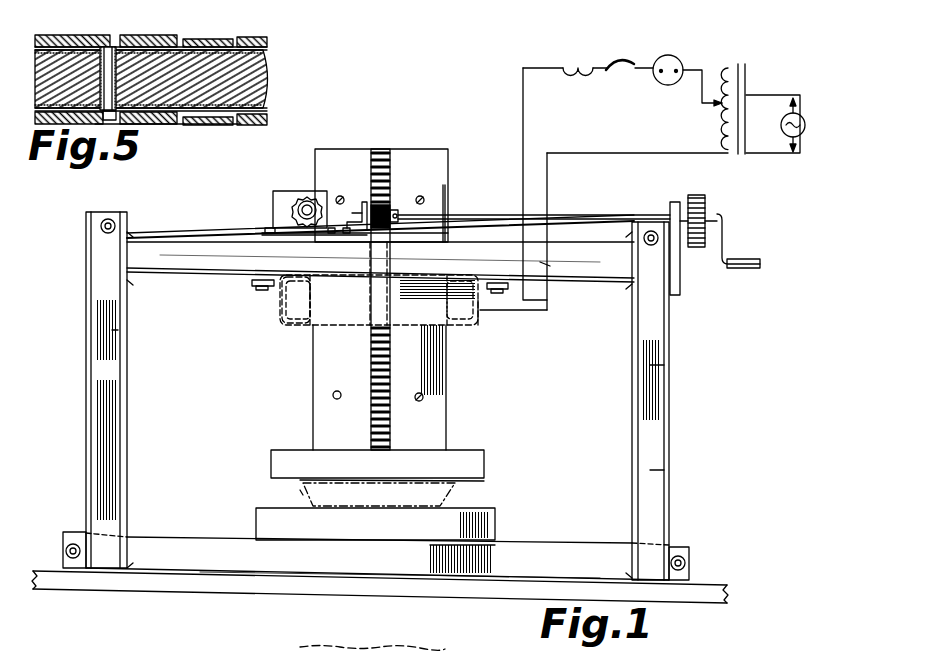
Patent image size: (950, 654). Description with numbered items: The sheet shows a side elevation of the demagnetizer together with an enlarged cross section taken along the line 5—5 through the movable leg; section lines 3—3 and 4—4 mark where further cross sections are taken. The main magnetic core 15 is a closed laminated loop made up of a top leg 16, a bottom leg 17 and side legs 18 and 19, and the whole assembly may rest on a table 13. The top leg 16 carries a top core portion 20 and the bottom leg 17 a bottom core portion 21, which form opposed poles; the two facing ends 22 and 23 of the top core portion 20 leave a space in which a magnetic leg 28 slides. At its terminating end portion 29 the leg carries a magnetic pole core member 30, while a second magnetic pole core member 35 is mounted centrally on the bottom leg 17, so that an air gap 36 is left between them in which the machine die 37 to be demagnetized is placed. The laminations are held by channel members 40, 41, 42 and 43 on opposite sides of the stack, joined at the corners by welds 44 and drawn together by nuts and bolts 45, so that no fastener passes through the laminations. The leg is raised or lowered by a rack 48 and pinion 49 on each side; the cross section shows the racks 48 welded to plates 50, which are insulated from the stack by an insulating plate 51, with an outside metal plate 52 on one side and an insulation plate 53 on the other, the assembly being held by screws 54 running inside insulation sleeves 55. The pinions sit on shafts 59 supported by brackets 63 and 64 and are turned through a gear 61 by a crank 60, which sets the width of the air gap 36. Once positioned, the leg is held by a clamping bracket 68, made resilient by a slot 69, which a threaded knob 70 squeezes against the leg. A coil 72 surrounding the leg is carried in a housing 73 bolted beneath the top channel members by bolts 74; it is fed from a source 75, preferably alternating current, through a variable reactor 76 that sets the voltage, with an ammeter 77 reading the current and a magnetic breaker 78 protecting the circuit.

In FIG. 1, the section line 3— 3 is at (380, 149).
In FIG. 1, the section line 4— 4 is at (50, 390).
In FIG. 1, the section line 5— 5 is at (334, 395).
In FIG. 1, the table 13 is at (706, 600).
In FIG. 1, the main magnetic core 15 is at (712, 361).
In FIG. 1, the top leg 16 is at (216, 242).
In FIG. 1, the bottom leg 17 is at (208, 550).
In FIG. 1, the side leg 18 is at (108, 492).
In FIG. 1, the side leg 19 is at (668, 446).
In FIG. 1, the top core portion 20 is at (268, 246).
In FIG. 1, the bottom core portion 21 is at (381, 570).
In FIG. 1, the facing end 22 is at (448, 238).
In FIG. 1, the facing end 23 is at (312, 262).
In FIG. 5, the magnetic leg 28 is at (268, 80).
In FIG. 1, the magnetic leg 28 is at (447, 390).
In FIG. 1, the terminating end portion 29 is at (436, 452).
In FIG. 1, the magnetic pole core member 30 is at (462, 464).
In FIG. 1, the magnetic pole core member 35 is at (484, 520).
In FIG. 1, the air gap 36 is at (268, 494).
In FIG. 1, the machine die 37 is at (442, 505).
In FIG. 1, the top channel member 40 is at (556, 280).
In FIG. 1, the side channel member 41 is at (116, 360).
In FIG. 1, the bottom channel member 42 is at (556, 550).
In FIG. 1, the side channel member 43 is at (668, 490).
In FIG. 1, the weld 44 is at (128, 236).
In FIG. 1, the nuts and bolts 45 is at (108, 218).
In FIG. 5, the rack 48 is at (186, 38).
In FIG. 1, the rack 48 is at (392, 176).
In FIG. 1, the pinion 49 is at (392, 206).
In FIG. 5, the plate 50 is at (270, 58).
In FIG. 5, the insulating plate 51 is at (262, 44).
In FIG. 5, the outside metal plate 52 is at (64, 37).
In FIG. 5, the insulation plate 53 is at (142, 126).
In FIG. 5, the screw 54 is at (108, 122).
In FIG. 1, the screw 54 is at (336, 392).
In FIG. 5, the insulation sleeve 55 is at (120, 60).
In FIG. 1, the shaft 59 is at (580, 216).
In FIG. 1, the crank 60 is at (730, 258).
In FIG. 1, the gear 61 is at (697, 195).
In FIG. 1, the bracket 63 is at (670, 208).
In FIG. 1, the bracket 64 is at (358, 205).
In FIG. 1, the clamping bracket 68 is at (290, 194).
In FIG. 1, the slot 69 is at (336, 234).
In FIG. 1, the threaded knob 70 is at (318, 194).
In FIG. 1, the coil 72 is at (470, 328).
In FIG. 1, the housing 73 is at (286, 326).
In FIG. 1, the bolt 74 is at (262, 288).
In FIG. 1, the source 75 is at (781, 126).
In FIG. 1, the variable reactor 76 is at (727, 128).
In FIG. 1, the ammeter 77 is at (664, 56).
In FIG. 1, the magnetic breaker 78 is at (612, 62).